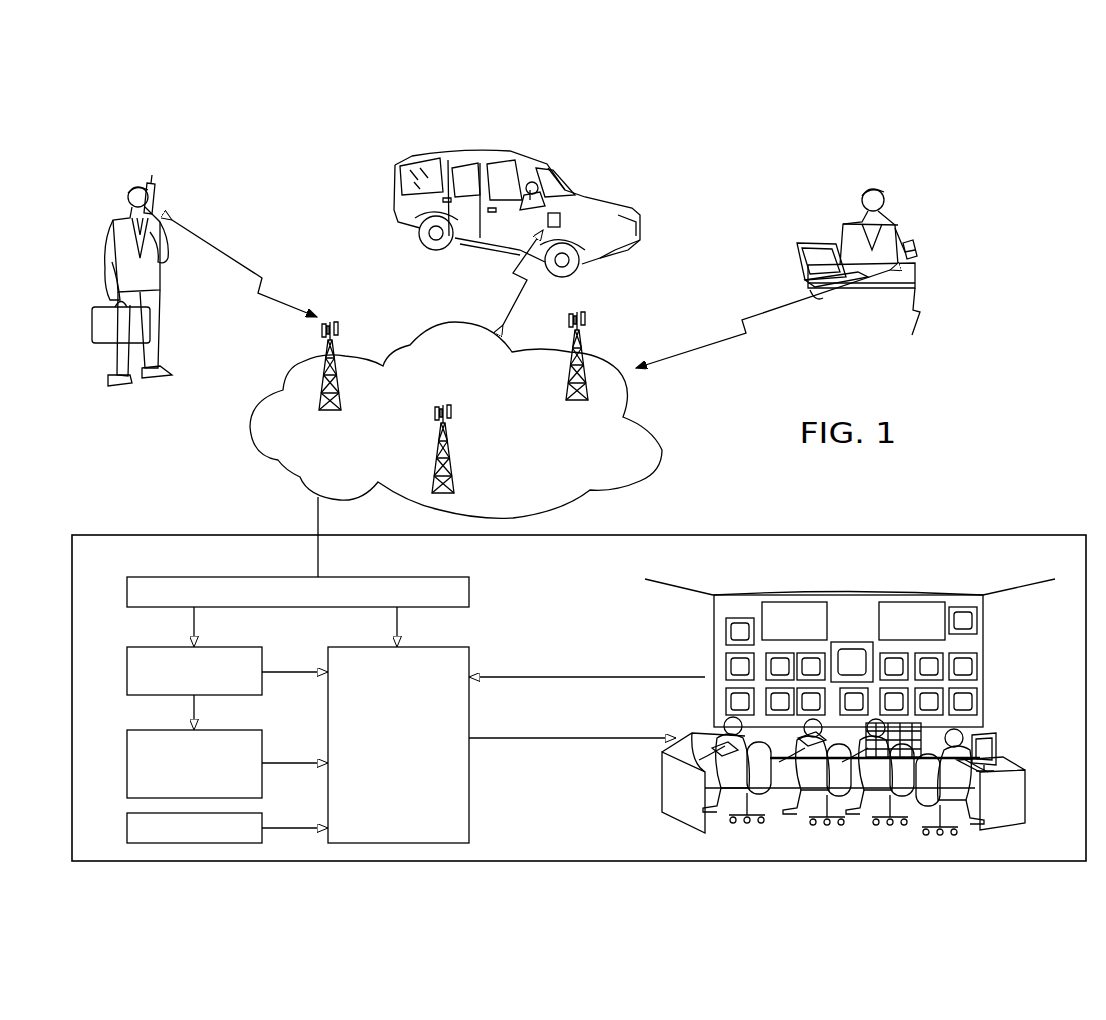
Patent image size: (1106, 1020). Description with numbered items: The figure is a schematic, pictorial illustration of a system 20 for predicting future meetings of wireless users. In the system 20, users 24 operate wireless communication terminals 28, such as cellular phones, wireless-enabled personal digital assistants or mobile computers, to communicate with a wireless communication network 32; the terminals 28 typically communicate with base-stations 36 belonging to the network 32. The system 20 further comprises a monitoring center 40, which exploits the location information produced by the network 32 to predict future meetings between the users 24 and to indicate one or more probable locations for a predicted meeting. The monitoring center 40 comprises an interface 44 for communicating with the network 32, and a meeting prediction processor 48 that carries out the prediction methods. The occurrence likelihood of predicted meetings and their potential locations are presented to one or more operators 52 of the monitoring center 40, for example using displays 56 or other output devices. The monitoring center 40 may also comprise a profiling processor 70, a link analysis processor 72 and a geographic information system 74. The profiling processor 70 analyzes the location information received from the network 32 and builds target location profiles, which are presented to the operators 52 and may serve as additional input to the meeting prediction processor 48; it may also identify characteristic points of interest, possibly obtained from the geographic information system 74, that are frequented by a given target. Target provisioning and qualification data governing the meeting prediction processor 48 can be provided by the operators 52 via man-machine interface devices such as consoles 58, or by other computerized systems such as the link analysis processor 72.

The system 20 is at (168, 488).
The users 24 is at (150, 200).
The wireless communication terminals 28 is at (120, 216).
The wireless communication network 32 is at (660, 448).
The base-stations 36 is at (320, 410).
The monitoring center 40 is at (935, 535).
The interface 44 is at (469, 598).
The meeting prediction processor 48 is at (328, 658).
The operators 52 is at (977, 735).
The displays 56 is at (965, 668).
The consoles 58 is at (995, 752).
The profiling processor 70 is at (127, 675).
The link analysis processor 72 is at (127, 757).
The Geographic Information System (GIS) 74 is at (127, 832).